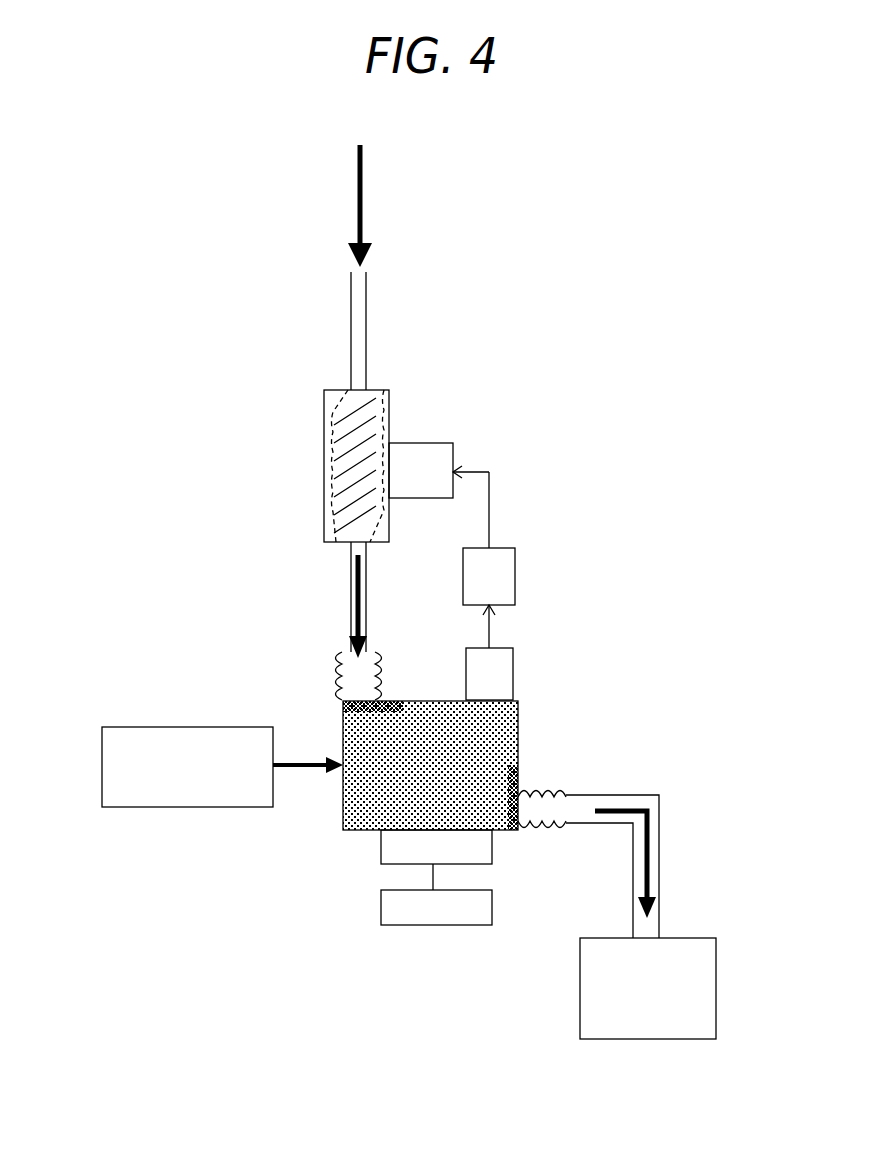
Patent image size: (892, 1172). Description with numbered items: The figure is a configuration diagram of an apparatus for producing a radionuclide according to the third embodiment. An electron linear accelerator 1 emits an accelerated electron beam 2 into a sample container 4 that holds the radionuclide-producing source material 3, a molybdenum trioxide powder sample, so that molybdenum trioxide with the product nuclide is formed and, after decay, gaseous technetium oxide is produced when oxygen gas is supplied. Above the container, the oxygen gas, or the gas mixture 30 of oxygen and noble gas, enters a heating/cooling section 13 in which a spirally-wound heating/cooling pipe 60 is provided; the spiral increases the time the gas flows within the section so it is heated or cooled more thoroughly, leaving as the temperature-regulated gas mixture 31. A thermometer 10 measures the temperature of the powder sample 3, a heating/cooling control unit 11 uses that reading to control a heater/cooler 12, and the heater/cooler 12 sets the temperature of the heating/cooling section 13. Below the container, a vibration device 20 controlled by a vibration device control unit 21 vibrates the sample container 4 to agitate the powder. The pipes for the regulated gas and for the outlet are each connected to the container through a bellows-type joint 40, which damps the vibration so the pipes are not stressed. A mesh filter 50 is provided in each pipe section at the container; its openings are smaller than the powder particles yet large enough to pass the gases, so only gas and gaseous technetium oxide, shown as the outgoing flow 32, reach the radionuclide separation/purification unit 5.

The electron linear accelerator 1 is at (222, 727).
The electron beam 2 is at (288, 758).
The radionuclide-producing source material (powder sample) 3 is at (408, 727).
The sample container 4 is at (527, 721).
The radionuclide separation/purification unit 5 is at (695, 975).
The thermometer 10 is at (503, 672).
The heating/cooling control unit 11 is at (499, 577).
The heater/cooler 12 is at (435, 459).
The heating/cooling section 13 is at (318, 400).
The vibration device 20 is at (390, 845).
The vibration device control unit 21 is at (392, 912).
The gas mixture before heating or cooling 30 is at (362, 228).
The gas mixture after heating or cooling 31 is at (350, 590).
The exhaust flow 32 is at (652, 828).
The joint 40 is at (380, 660).
The mesh filter 50 is at (405, 700).
The spirally-wound heating/cooling pipe 60 is at (343, 484).